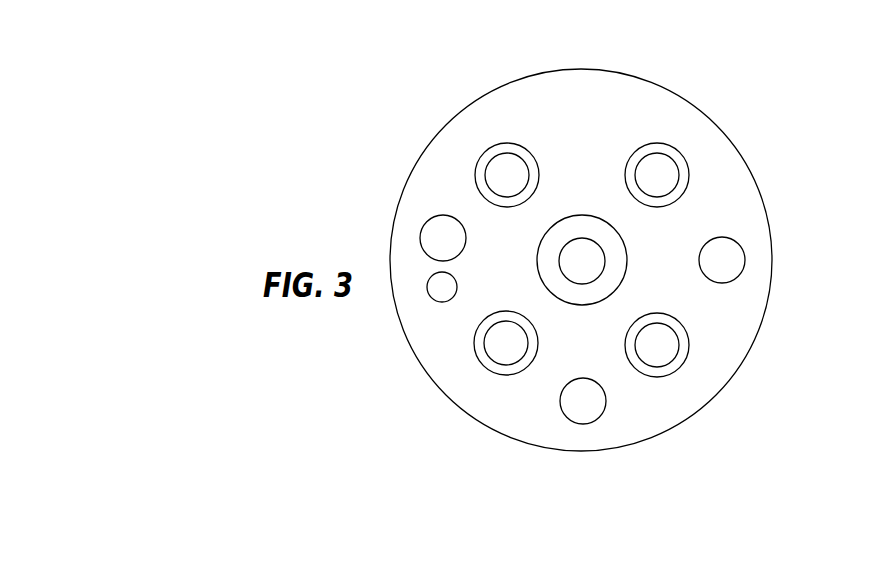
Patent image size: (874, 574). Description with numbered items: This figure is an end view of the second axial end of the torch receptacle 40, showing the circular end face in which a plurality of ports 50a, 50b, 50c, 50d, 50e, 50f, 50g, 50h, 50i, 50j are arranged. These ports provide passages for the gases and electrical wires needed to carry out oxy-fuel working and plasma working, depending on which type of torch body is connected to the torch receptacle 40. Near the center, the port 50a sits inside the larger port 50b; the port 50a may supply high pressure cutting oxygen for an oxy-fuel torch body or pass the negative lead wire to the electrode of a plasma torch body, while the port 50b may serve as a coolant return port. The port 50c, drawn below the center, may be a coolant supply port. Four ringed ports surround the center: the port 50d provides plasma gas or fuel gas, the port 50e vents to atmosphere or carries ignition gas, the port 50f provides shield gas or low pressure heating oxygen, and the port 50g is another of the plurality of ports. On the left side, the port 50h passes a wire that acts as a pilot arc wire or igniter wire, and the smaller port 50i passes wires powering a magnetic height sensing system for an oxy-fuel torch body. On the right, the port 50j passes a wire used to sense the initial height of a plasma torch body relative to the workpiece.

The torch receptacle 40 is at (661, 86).
The port 50a is at (598, 243).
The port 50b is at (623, 283).
The port 50c is at (606, 402).
The port 50d is at (673, 153).
The port 50e is at (675, 360).
The port 50f is at (500, 368).
The port 50g is at (497, 150).
The port 50h is at (430, 220).
The port 50i is at (437, 302).
The port 50j is at (738, 240).